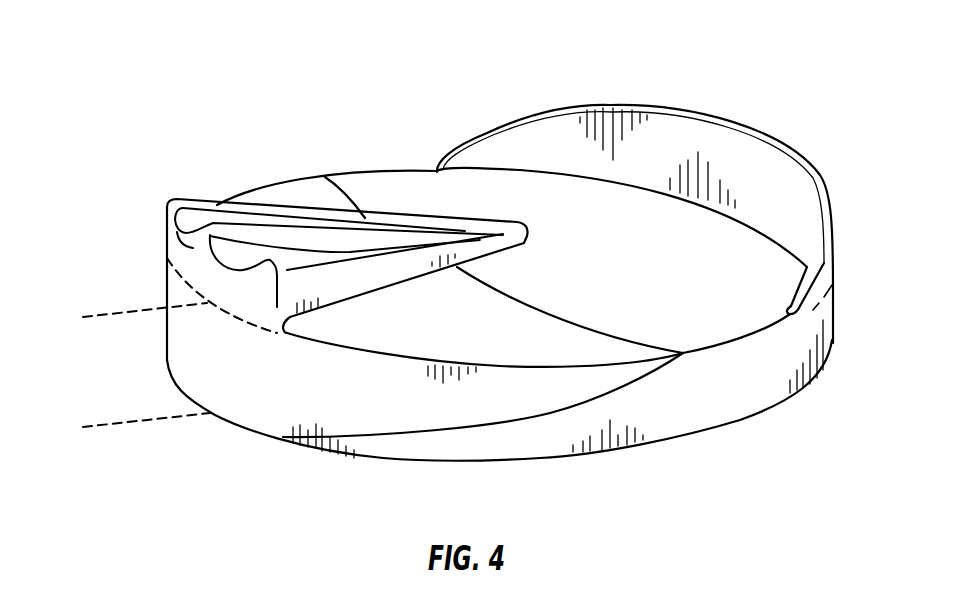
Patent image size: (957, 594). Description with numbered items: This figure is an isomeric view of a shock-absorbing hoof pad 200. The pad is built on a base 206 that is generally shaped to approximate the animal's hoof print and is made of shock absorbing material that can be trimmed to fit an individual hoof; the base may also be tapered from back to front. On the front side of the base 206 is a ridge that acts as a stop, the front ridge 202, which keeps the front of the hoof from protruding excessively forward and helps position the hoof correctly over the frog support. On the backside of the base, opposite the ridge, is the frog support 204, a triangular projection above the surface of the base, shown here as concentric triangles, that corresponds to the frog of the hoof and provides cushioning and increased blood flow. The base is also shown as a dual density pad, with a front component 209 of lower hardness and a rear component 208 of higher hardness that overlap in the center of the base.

The shock-absorbing hoof pad 200 is at (214, 77).
The front ridge 202 is at (810, 168).
The frog support 204 is at (167, 213).
The base 206 is at (86, 318).
The rear component 208 is at (272, 198).
The front component 209 is at (415, 197).